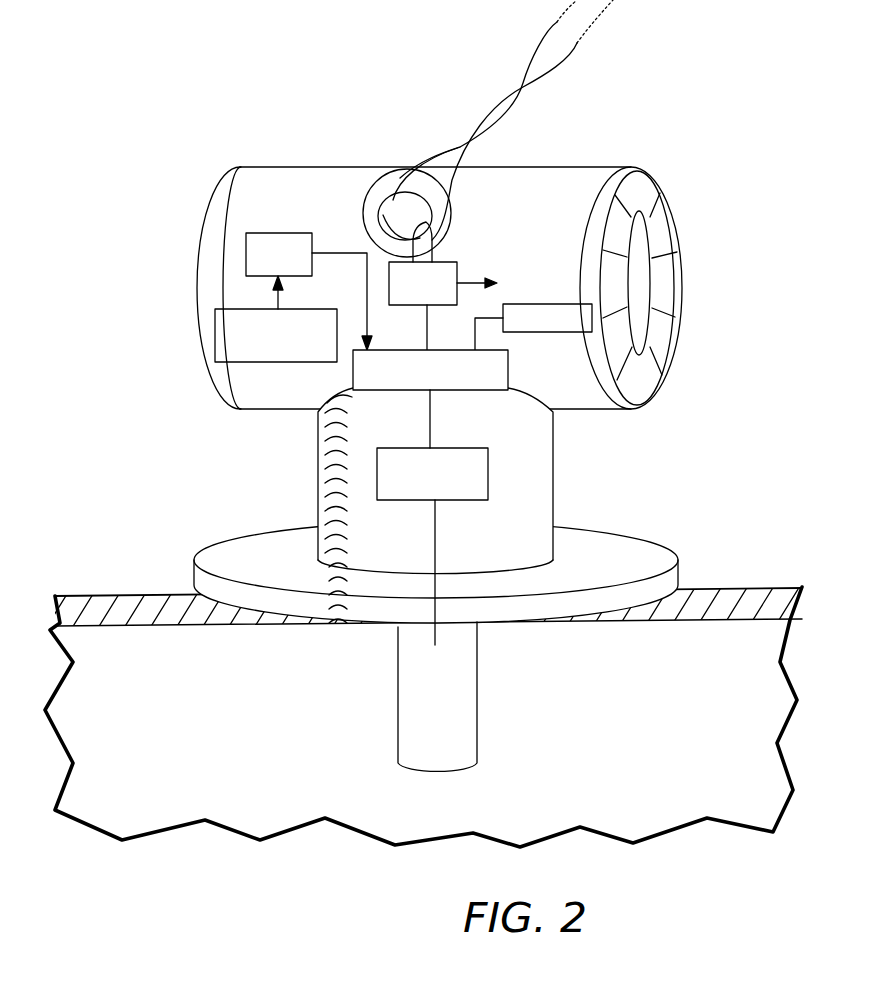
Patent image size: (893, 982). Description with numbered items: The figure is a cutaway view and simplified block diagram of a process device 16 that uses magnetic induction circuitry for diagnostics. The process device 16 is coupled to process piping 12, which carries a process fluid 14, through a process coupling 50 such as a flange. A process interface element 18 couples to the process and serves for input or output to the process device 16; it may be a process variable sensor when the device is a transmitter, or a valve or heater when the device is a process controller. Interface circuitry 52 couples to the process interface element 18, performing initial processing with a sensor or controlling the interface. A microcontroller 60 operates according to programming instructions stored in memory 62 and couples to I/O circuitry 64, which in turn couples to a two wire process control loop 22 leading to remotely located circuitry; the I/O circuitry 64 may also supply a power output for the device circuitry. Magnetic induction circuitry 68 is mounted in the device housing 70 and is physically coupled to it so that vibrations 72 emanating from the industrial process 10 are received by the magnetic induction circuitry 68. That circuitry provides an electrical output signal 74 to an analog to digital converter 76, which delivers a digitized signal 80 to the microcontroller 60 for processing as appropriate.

The industrial process 10 is at (696, 75).
The process piping 12 is at (723, 588).
The process fluid 14 is at (646, 746).
The process device 16 is at (415, 245).
The process interface element 18 is at (413, 696).
The process control loop 22 is at (492, 97).
The process coupling 50 is at (645, 551).
The interface circuitry 52 is at (478, 448).
The microcontroller 60 is at (509, 372).
The memory 62 is at (541, 332).
The I/O circuitry 64 is at (441, 262).
The magnetic induction circuitry 68 is at (216, 338).
The device housing 70 is at (218, 243).
The vibrations 72 is at (325, 513).
The electrical output signal 74 is at (262, 308).
The analog to digital converter 76 is at (277, 233).
The digitized signal 80 is at (333, 252).